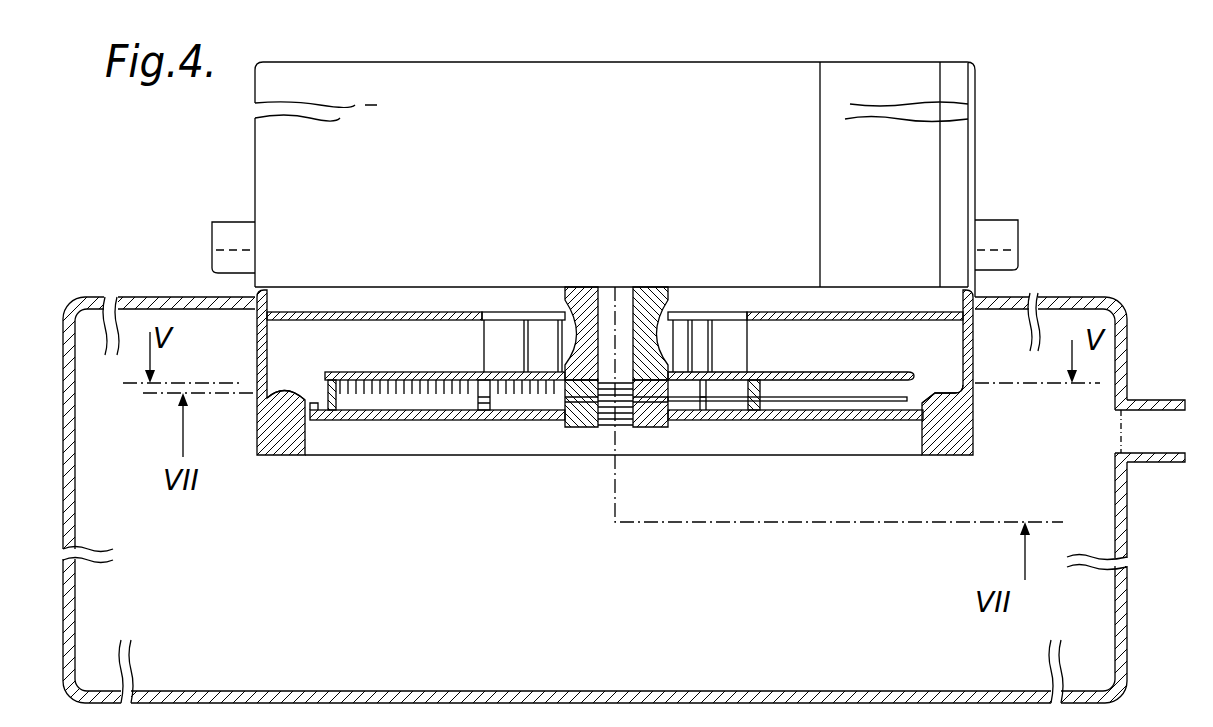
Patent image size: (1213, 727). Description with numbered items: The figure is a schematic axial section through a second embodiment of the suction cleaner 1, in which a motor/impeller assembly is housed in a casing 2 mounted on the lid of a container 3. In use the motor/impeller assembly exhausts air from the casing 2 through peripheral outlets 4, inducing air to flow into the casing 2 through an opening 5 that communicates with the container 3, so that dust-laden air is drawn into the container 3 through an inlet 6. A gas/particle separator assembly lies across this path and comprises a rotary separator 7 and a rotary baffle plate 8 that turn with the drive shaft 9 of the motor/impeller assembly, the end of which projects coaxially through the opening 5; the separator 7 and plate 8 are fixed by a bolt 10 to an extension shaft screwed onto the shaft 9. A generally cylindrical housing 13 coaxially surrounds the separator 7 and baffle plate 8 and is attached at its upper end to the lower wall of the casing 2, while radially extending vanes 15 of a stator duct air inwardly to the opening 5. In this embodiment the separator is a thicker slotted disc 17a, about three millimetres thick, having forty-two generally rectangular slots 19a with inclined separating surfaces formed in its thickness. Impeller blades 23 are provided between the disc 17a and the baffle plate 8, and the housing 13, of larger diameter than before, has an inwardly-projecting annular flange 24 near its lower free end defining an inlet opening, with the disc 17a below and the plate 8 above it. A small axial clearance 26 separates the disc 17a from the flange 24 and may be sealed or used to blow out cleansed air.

The suction cleaner 1 is at (607, 179).
The casing 2 is at (977, 172).
The container 3 is at (93, 300).
The peripheral outlets 4 is at (212, 238).
The opening 5 is at (712, 315).
The inlet 6 is at (1185, 445).
The rotary separator 7 is at (494, 431).
The rotary baffle plate 8 is at (332, 372).
The drive shaft 9 is at (627, 287).
The bolt 10 is at (663, 427).
The housing 13 is at (977, 358).
The vanes 15 is at (418, 333).
The slotted disc 17a is at (794, 526).
The slots 19a is at (432, 526).
The impeller blades 23 is at (770, 392).
The annular flange 24 is at (278, 397).
The axial clearance 26 is at (927, 410).